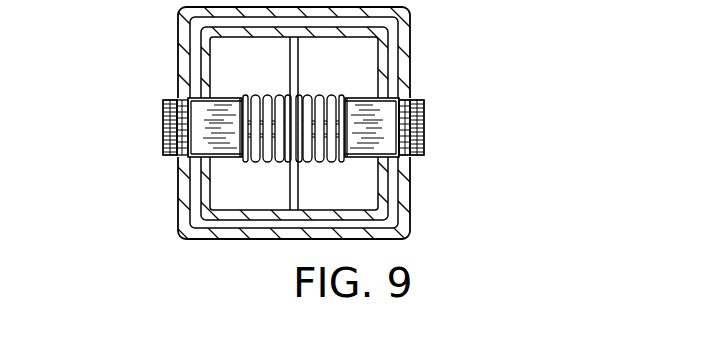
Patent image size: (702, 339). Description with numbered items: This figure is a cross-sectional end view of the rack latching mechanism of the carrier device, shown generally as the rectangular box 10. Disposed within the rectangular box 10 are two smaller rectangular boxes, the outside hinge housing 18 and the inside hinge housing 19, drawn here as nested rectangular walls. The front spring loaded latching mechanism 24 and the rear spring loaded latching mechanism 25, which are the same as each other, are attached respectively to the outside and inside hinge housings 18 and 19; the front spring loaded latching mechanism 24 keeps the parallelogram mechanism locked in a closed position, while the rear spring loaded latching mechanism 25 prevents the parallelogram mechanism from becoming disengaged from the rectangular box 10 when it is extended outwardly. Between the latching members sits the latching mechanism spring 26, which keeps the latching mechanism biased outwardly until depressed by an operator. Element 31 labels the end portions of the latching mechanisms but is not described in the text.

The rectangular box 10 is at (351, 169).
The outside hinge housing 18 is at (351, 169).
The inside hinge housing 19 is at (205, 70).
The front spring loaded latching mechanism 24 is at (422, 102).
The rear spring loaded latching mechanism 25 is at (422, 102).
The latching mechanism spring 26 is at (332, 97).
The nut 31 is at (175, 135).